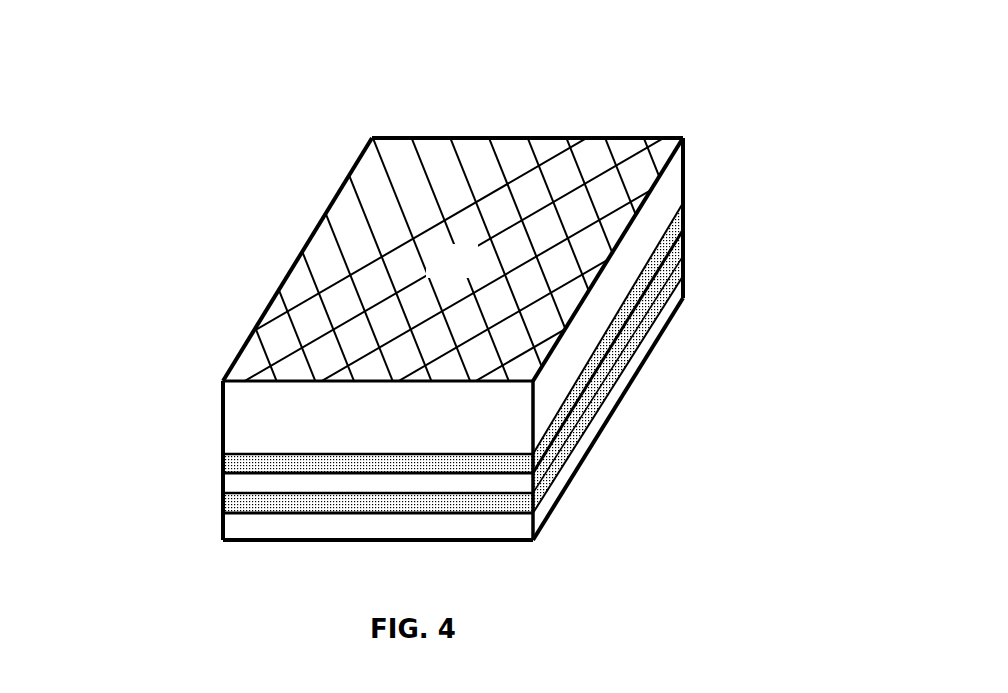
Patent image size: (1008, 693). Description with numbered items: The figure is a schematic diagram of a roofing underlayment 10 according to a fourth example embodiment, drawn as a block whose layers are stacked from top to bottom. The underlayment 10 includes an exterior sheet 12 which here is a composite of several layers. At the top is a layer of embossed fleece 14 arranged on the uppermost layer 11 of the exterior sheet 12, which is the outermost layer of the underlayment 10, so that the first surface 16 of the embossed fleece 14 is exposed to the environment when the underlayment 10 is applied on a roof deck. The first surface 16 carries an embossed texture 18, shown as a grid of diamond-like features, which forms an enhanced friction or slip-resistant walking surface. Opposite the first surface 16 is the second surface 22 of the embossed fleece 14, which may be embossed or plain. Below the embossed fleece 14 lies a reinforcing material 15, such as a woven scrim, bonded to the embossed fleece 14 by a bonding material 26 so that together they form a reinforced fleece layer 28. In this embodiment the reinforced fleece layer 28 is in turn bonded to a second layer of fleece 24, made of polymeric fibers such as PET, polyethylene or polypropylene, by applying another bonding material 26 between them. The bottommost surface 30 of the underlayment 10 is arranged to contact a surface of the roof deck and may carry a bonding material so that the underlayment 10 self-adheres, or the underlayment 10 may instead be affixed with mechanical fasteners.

The underlayment 10 is at (778, 116).
The uppermost layer 11 is at (430, 153).
The exterior sheet 12 is at (714, 216).
The embossed fleece 14 is at (389, 430).
The reinforcing material 15 is at (255, 483).
The first surface 16 is at (467, 271).
The embossed texture 18 is at (338, 242).
The second surface 22 is at (258, 452).
The second layer of fleece 24 is at (238, 527).
The bonding material 26 is at (237, 467).
The reinforced fleece layer 28 is at (129, 443).
The bottommost surface 30 is at (303, 542).